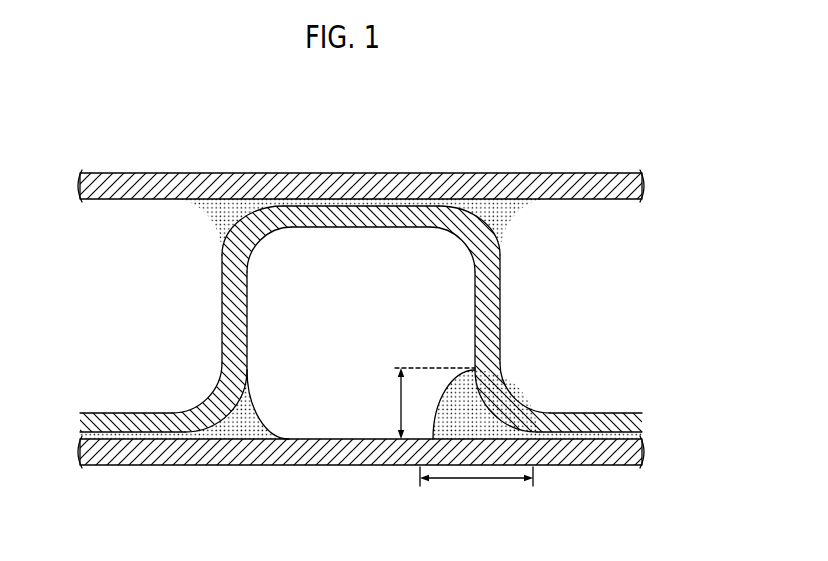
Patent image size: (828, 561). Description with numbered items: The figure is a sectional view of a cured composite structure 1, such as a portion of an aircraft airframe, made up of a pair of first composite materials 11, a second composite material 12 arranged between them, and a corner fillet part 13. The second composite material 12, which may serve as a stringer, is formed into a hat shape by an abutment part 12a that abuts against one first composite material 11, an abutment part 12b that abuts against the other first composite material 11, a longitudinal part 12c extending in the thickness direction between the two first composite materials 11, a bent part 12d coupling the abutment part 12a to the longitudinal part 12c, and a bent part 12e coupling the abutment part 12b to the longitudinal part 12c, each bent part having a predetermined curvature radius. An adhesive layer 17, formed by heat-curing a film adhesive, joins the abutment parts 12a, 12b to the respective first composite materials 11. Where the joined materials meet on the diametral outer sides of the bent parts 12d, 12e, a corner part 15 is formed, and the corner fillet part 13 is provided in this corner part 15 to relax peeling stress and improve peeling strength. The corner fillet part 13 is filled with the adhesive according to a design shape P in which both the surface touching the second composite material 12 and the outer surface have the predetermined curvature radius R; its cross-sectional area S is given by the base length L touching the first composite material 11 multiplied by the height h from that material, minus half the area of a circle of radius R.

The composite structure 1 is at (297, 149).
The first composite material 11 is at (446, 170).
The second composite material 12 is at (361, 319).
The abutment part 12a is at (348, 229).
The abutment part 12b is at (118, 412).
The longitudinal part 12c is at (221, 321).
The bent part 12d is at (455, 242).
The bent part 12e is at (516, 400).
The corner fillet part 13 is at (261, 414).
The corner part 15 is at (249, 430).
The adhesive layer 17 is at (132, 437).
The predetermined curvature radius R is at (240, 215).
The height of the corner fillet part h is at (400, 399).
The design shape P is at (452, 424).
The cross-sectional area S is at (490, 436).
The length of the base L is at (476, 490).